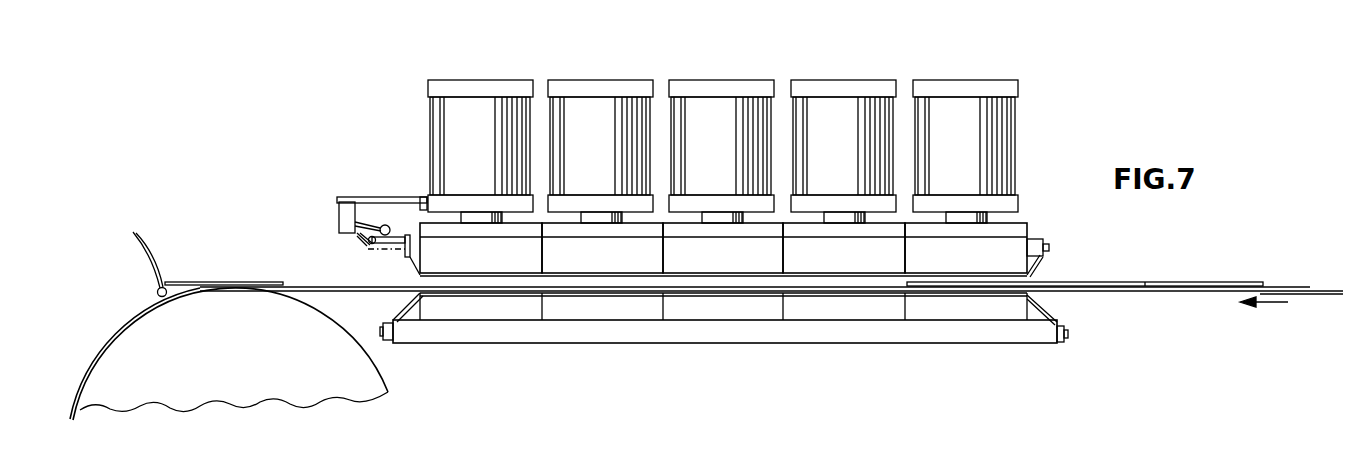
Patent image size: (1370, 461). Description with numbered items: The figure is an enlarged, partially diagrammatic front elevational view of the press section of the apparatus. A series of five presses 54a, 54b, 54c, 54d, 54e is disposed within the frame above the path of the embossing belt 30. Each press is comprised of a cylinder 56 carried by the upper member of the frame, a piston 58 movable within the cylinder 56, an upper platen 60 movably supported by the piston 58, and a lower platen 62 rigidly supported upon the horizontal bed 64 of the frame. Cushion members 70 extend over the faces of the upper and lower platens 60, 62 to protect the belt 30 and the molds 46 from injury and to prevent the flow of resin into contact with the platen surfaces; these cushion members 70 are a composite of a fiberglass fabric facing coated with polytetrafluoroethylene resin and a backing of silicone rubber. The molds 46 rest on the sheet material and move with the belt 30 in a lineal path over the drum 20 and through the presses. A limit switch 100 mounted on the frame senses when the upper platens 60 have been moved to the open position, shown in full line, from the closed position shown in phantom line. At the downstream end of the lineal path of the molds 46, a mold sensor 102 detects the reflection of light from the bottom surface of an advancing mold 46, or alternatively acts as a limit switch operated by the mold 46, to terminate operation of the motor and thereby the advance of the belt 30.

The drum 20 is at (224, 382).
The belt 30 is at (1177, 294).
The molds 46 is at (192, 281).
The press 54a is at (962, 78).
The press 54b is at (840, 78).
The press 54c is at (718, 78).
The press 54d is at (597, 78).
The press 54e is at (477, 78).
The cylinder 56 is at (482, 151).
The piston 58 is at (477, 221).
The upper platen 60 is at (601, 265).
The lower platen 62 is at (484, 312).
The horizontal bed 64 is at (602, 338).
The cushion members 70 is at (1036, 270).
The limit switch 100 is at (343, 222).
The mold sensor 102 is at (157, 294).